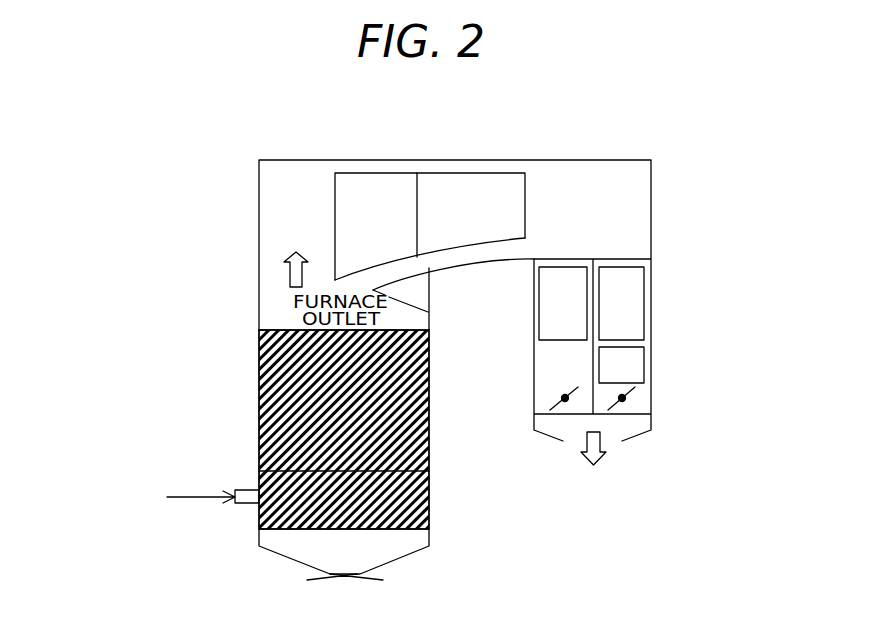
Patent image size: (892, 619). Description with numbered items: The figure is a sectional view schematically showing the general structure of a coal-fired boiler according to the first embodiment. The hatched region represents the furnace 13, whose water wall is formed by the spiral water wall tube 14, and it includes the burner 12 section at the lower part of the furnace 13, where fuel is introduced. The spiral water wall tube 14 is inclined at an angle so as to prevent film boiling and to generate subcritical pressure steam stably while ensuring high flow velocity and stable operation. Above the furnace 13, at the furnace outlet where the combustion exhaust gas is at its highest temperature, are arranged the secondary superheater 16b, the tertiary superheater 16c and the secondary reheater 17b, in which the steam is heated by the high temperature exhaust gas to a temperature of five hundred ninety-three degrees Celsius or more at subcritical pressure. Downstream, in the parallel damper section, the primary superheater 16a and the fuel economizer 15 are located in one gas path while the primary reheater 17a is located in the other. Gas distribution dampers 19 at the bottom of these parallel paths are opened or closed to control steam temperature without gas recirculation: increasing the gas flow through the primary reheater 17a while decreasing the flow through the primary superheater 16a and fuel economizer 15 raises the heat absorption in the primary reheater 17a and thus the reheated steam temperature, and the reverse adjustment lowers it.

The burner 12 is at (246, 490).
The furnace 13 is at (259, 357).
The spiral water wall tube 14 is at (413, 363).
The fuel economizer 15 is at (638, 363).
The primary superheater 16a is at (638, 299).
The secondary superheater 16b is at (372, 178).
The tertiary superheater 16c is at (471, 174).
The primary reheater 17a is at (547, 298).
The secondary reheater 17b is at (467, 178).
The gas distribution dampers 19 is at (557, 397).